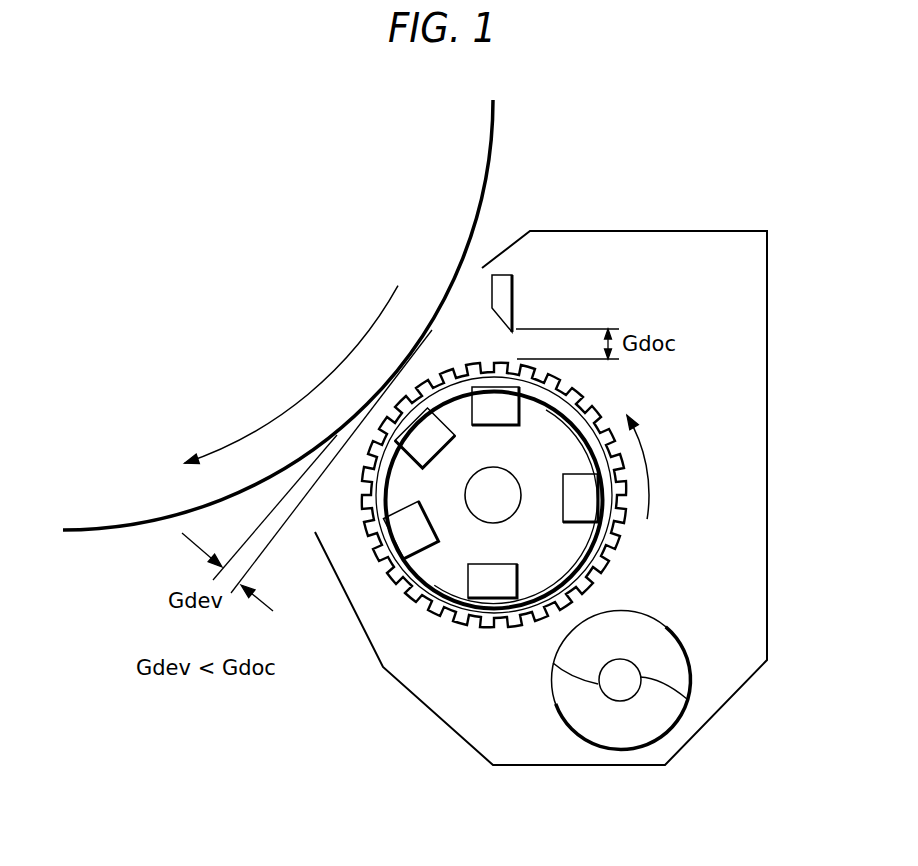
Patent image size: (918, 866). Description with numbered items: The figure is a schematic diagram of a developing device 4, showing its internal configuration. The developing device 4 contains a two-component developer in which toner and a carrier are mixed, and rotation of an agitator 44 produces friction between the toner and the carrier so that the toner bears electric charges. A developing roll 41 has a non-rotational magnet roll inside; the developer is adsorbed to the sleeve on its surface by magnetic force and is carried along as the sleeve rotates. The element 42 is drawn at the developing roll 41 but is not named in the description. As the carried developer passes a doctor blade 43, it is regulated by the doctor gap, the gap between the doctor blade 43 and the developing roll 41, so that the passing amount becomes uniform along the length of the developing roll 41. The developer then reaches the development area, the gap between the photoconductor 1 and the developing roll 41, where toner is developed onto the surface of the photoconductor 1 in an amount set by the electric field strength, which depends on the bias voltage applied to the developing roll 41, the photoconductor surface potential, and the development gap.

The photoconductor 1 is at (500, 130).
The developing device 4 is at (767, 441).
The developing roll 41 is at (617, 553).
The developing sleeve 42 is at (452, 578).
The doctor blade 43 is at (503, 273).
The agitator 44 is at (670, 705).